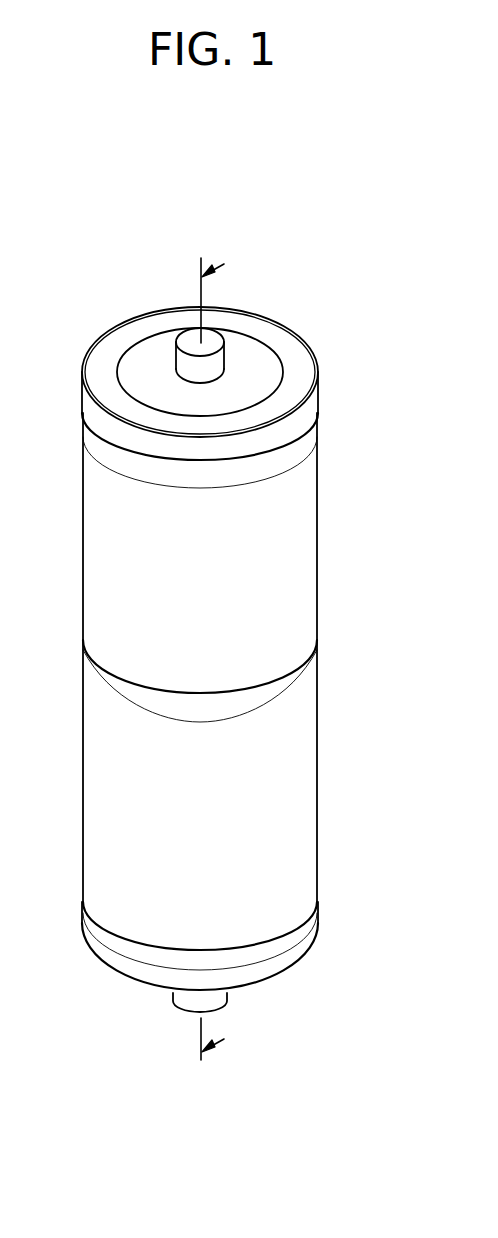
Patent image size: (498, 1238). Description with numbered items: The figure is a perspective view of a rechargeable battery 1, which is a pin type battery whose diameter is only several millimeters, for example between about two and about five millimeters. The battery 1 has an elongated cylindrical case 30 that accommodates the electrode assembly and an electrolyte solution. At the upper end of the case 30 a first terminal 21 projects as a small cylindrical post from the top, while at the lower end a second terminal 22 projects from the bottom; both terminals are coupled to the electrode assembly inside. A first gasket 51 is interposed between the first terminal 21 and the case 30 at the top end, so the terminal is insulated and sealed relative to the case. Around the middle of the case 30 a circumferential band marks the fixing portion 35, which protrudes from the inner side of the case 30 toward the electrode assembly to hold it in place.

The rechargeable battery 1 is at (104, 244).
The first terminal 21 is at (218, 367).
The second terminal 22 is at (205, 998).
The case 30 is at (293, 511).
The fixing portion 35 is at (293, 677).
The first gasket 51 is at (293, 372).